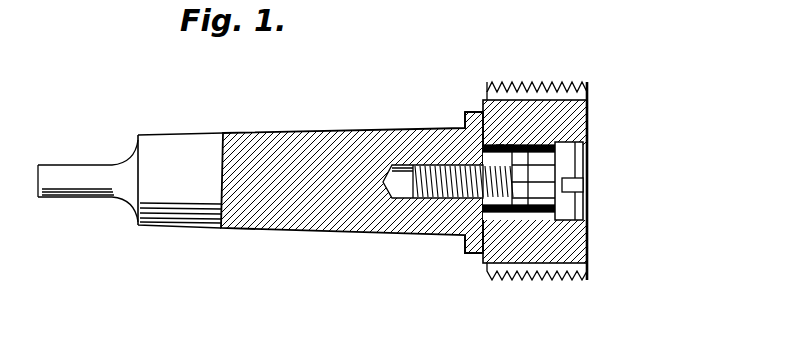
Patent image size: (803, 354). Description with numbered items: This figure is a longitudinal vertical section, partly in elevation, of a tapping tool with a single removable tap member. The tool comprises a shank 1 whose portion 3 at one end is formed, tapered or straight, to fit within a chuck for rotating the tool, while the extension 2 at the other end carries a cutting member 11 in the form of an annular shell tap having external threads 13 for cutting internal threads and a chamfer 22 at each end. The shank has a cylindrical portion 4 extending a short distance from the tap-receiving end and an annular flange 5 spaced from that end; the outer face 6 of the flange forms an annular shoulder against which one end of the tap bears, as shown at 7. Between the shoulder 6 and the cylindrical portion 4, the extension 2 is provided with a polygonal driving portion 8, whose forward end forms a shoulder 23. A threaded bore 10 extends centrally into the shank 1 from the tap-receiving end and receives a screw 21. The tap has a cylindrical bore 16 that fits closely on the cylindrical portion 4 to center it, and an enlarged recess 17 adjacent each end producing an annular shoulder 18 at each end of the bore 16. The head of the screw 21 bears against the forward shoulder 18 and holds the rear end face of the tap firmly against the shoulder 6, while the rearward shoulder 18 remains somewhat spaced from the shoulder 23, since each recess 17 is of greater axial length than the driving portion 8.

The shank 1 is at (270, 230).
The extension of the shank 2 is at (496, 265).
The chuck-fitting portion of the shank 3 is at (276, 133).
The cylindrical portion 4 is at (557, 151).
The annular flange 5 is at (468, 254).
The outer face of the flange 6 is at (483, 110).
The bearing location of tap end against shoulder 7 is at (500, 146).
The driving portion 8 is at (510, 146).
The threaded bore 10 is at (418, 200).
The cutting member 11 is at (593, 242).
The external threads 13 is at (560, 92).
The cylindrical bore 16 is at (500, 152).
The enlarged recess 17 is at (584, 218).
The annular shoulder 18 is at (524, 270).
The screw 21 is at (570, 182).
The chamfer 22 is at (488, 92).
The shoulder at forward end of polygonal portion 23 is at (480, 148).